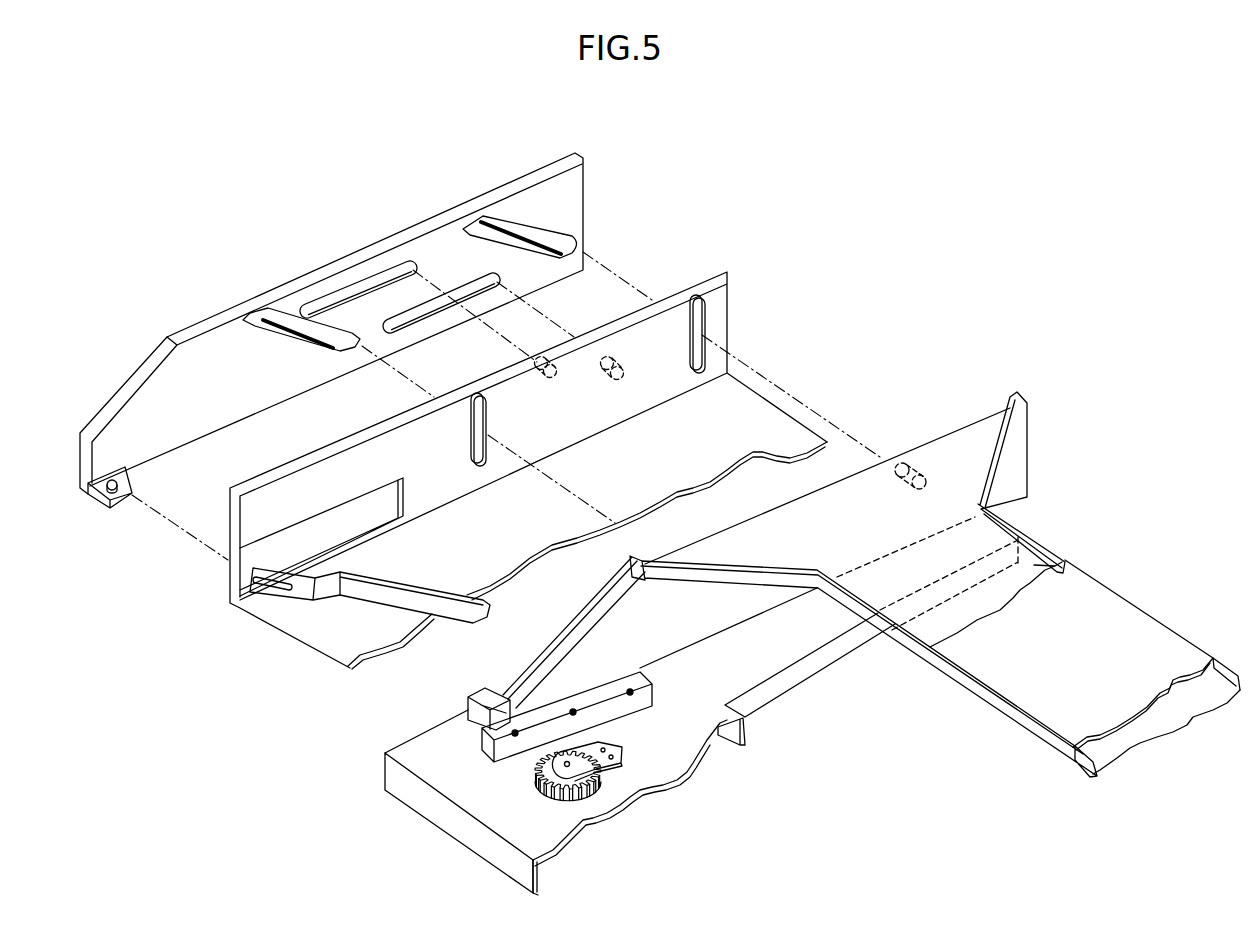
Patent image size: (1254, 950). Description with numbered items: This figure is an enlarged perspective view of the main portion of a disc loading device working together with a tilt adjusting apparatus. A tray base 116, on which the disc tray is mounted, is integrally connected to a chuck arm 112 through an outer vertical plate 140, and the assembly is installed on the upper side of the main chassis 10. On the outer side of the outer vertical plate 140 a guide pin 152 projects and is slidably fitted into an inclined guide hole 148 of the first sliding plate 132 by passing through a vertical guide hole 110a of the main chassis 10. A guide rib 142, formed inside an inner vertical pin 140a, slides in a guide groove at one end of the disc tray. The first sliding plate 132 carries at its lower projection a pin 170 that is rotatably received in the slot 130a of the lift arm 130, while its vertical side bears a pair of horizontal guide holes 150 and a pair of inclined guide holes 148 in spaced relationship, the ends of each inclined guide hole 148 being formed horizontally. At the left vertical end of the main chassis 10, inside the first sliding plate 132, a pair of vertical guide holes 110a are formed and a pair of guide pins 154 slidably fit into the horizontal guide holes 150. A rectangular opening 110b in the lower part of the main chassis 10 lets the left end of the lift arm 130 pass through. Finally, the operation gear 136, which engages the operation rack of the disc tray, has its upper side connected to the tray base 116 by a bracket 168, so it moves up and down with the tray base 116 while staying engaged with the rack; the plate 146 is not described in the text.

The main chassis 10 is at (310, 619).
The vertical guide hole 110a is at (477, 426).
The rectangular opening 110b is at (242, 578).
The chuck arm 112 is at (1063, 560).
The tray base 116 is at (637, 780).
The lift arm 130 is at (390, 594).
The slot 130a is at (255, 601).
The first sliding plate 132 is at (128, 391).
The operation gear 136 is at (590, 815).
The outer vertical plate 140 is at (537, 652).
The inner vertical pin 140a is at (527, 690).
The guide rib 142 is at (443, 787).
The plate 146 is at (1133, 630).
The inclined guide hole 148 is at (284, 321).
The horizontal guide hole 150 is at (460, 287).
The guide pin 152 is at (923, 477).
The guide pin 154 is at (533, 368).
The bracket 168 is at (580, 757).
The pin 170 is at (92, 493).